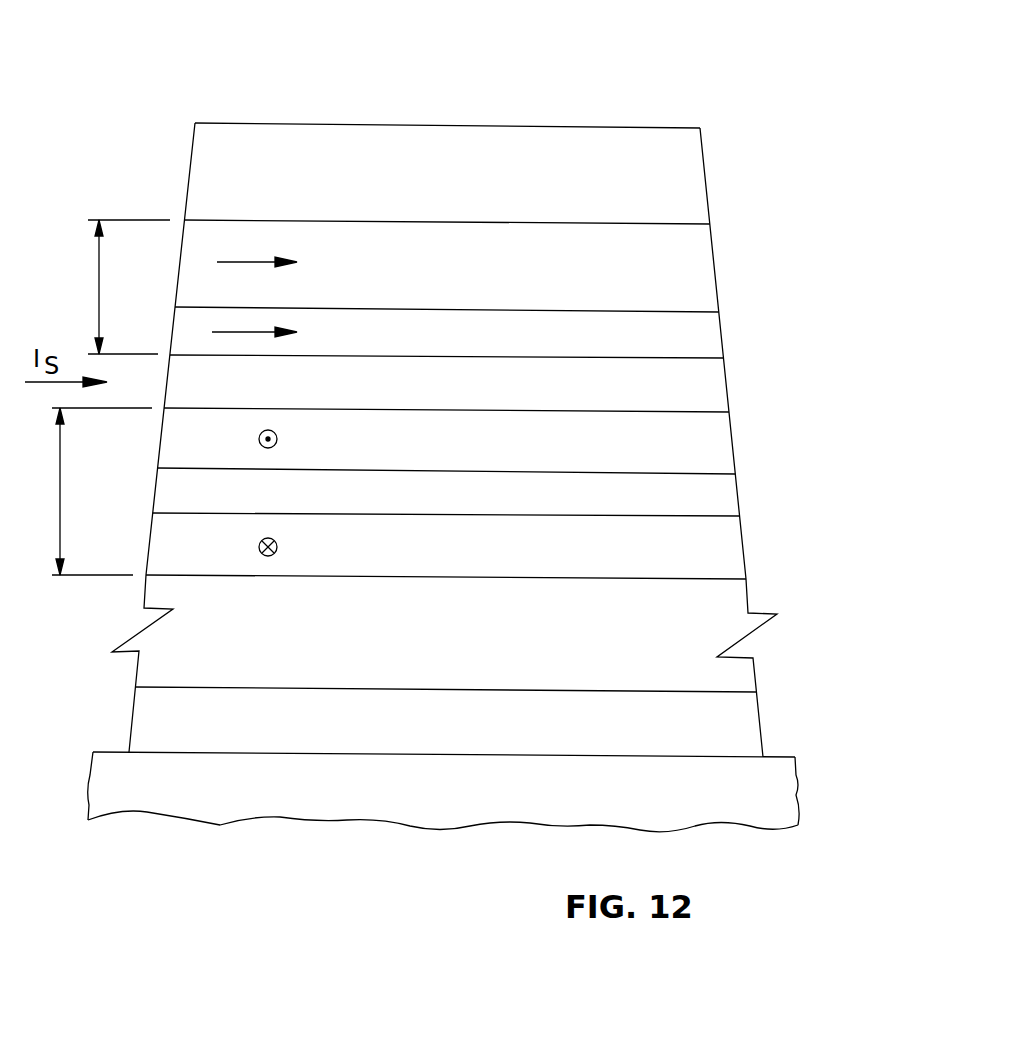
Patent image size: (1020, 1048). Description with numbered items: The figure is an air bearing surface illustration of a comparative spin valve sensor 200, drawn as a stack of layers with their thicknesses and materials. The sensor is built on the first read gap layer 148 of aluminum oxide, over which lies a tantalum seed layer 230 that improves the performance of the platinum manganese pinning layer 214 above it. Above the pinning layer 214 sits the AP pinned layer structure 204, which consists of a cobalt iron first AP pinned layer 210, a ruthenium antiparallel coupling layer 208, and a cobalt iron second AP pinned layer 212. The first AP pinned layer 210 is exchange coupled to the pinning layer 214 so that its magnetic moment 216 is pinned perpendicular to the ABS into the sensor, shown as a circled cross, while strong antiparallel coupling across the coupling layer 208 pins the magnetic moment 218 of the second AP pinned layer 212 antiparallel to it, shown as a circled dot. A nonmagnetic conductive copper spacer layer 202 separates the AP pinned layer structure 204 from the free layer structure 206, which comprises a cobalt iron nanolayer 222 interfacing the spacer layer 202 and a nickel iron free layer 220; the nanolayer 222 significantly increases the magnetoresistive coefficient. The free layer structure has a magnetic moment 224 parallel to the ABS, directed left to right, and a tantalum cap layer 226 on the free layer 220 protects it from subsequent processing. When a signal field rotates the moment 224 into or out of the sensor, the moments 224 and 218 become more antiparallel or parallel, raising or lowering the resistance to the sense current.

The spin valve sensor 200 is at (680, 72).
The cap layer 226 is at (700, 178).
The free layer 220 is at (712, 265).
The nanolayer 222 is at (720, 340).
The spacer layer 202 is at (724, 390).
The second AP pinned layer 212 is at (731, 443).
The antiparallel coupling layer 208 is at (736, 496).
The first AP pinned layer 210 is at (741, 543).
The pinning layer 214 is at (746, 600).
The seed layer 230 is at (758, 728).
The first read gap layer 148 is at (795, 780).
The magnetic moment of the free layer structure 224 is at (241, 262).
The magnetic moment of the second AP pinned layer 218 is at (259, 439).
The magnetic moment of the first AP pinned layer 216 is at (259, 547).
The free layer structure 206 is at (99, 220).
The AP pinned layer structure 204 is at (60, 575).